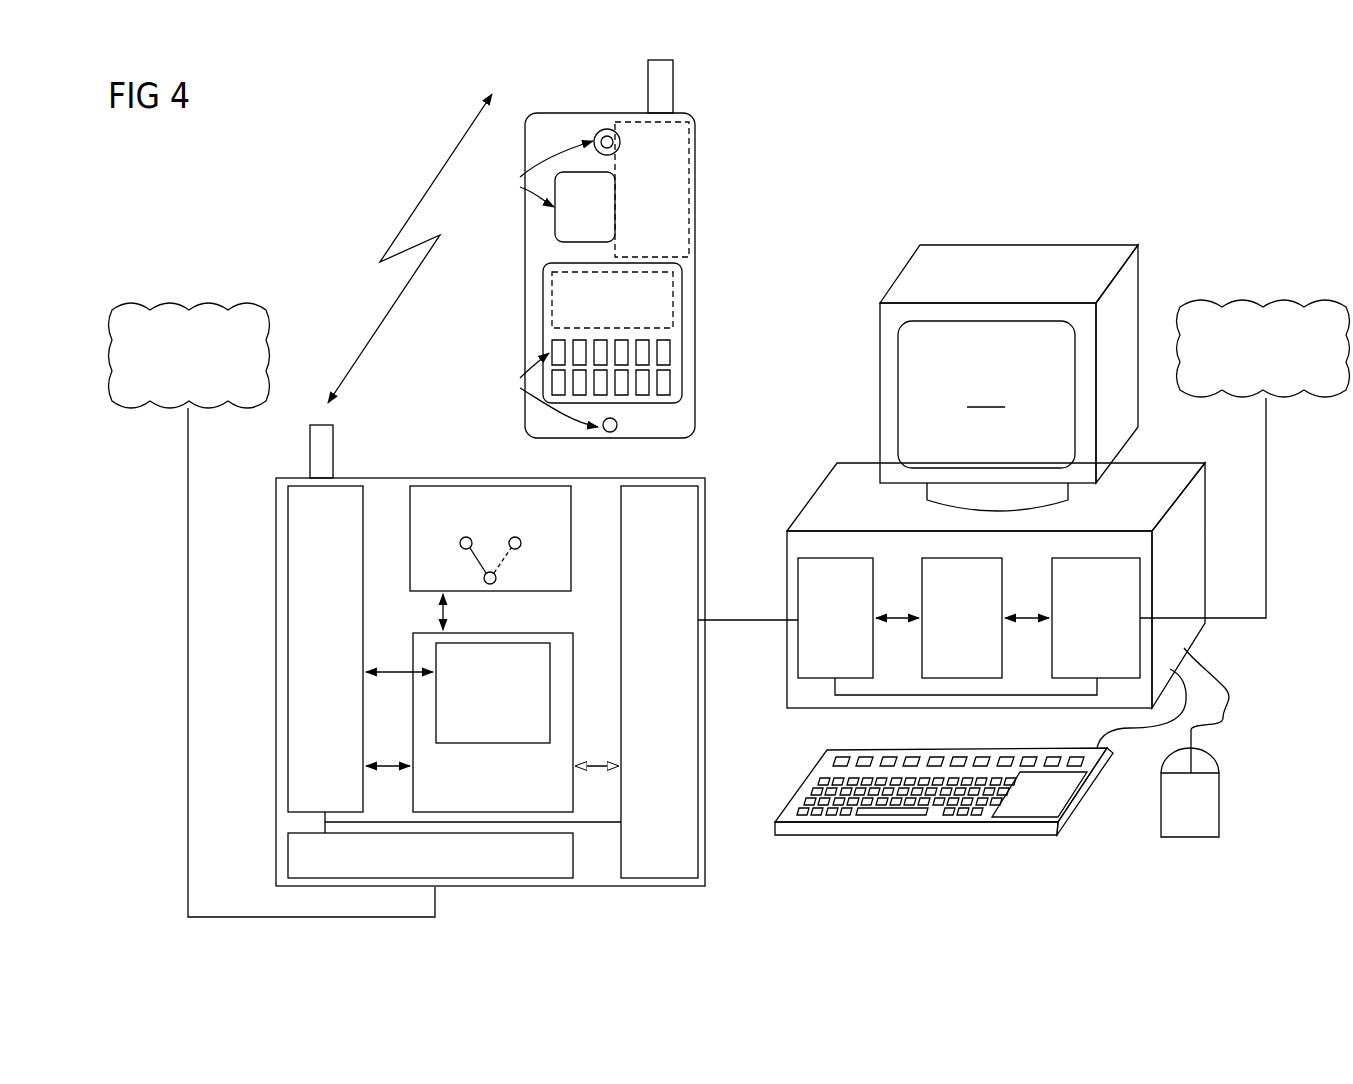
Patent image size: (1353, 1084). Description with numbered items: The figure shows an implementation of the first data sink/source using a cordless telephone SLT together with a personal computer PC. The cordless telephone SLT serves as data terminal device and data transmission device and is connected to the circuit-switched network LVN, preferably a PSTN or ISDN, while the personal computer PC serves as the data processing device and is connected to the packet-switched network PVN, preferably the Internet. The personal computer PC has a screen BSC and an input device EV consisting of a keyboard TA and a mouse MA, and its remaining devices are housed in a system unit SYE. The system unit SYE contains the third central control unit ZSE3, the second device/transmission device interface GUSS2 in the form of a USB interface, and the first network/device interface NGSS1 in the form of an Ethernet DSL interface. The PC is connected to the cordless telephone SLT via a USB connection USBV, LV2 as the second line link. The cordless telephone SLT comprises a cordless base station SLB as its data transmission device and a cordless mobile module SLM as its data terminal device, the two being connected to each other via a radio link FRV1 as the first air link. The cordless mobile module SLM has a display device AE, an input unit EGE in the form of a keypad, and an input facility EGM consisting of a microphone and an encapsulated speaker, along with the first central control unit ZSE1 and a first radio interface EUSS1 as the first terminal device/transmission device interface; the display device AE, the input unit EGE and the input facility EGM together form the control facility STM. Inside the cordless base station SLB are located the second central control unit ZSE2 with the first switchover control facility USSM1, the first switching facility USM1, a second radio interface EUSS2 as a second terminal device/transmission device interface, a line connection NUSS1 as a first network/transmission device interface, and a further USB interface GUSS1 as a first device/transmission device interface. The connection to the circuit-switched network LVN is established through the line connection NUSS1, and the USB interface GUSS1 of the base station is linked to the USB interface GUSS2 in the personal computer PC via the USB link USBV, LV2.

The input facility EGM is at (612, 130).
The first radio interface EUSS1 is at (680, 150).
The control facility STM is at (534, 284).
The display device AE is at (572, 225).
The cordless mobile module SLM is at (690, 268).
The first central control unit ZSE1 is at (672, 297).
The input unit EGE is at (676, 383).
The radio link FRV1 is at (385, 316).
The cordless telephone SLT is at (485, 415).
The circuit-switched network LVN is at (125, 410).
The second radio interface EUSS2 is at (298, 746).
The first switching facility USM1 is at (530, 580).
The first switchover control facility USSM1 is at (587, 686).
The second central control unit ZSE2 is at (563, 790).
The USB interface GUSS1 is at (698, 738).
The line connection NUSS1 is at (518, 861).
The cordless base station SLB is at (584, 860).
The second line link LV2 is at (749, 617).
The USB connection USBV is at (748, 561).
The personal computer PC is at (988, 496).
The system unit SYE is at (1186, 540).
The second device/transmission device interface GUSS2 is at (815, 665).
The third central control unit ZSE3 is at (963, 668).
The first network/device interface NGSS1 is at (1081, 665).
The screen BSC is at (1009, 378).
The packet-switched network PVN is at (1311, 396).
The keyboard TA is at (923, 828).
The input device EV is at (1031, 784).
The mouse MA is at (1211, 807).